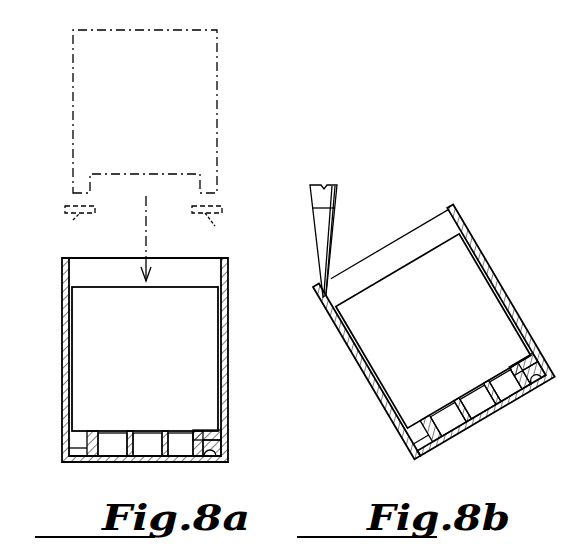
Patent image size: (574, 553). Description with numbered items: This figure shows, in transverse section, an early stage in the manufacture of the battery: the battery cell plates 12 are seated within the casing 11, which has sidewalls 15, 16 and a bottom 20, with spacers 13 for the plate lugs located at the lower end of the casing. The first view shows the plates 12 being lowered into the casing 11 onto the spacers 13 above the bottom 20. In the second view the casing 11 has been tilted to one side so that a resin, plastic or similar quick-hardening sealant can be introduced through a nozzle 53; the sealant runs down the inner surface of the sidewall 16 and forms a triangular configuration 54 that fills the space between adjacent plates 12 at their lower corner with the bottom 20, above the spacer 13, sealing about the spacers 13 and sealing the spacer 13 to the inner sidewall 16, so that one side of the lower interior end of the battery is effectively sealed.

In FIG. 8a, the casing 11 is at (228, 350).
In FIG. 8a, the battery cell plates 12 is at (151, 95).
In FIG. 8b, the battery cell plates 12 is at (450, 268).
In FIG. 8a, the spacers 13 is at (72, 221).
In FIG. 8b, the sidewall 15 is at (488, 261).
In FIG. 8b, the sidewall 16 is at (360, 360).
In FIG. 8a, the bottom 20 is at (147, 463).
In FIG. 8b, the nozzle 53 is at (331, 229).
In FIG. 8b, the triangular configuration 54 is at (406, 424).